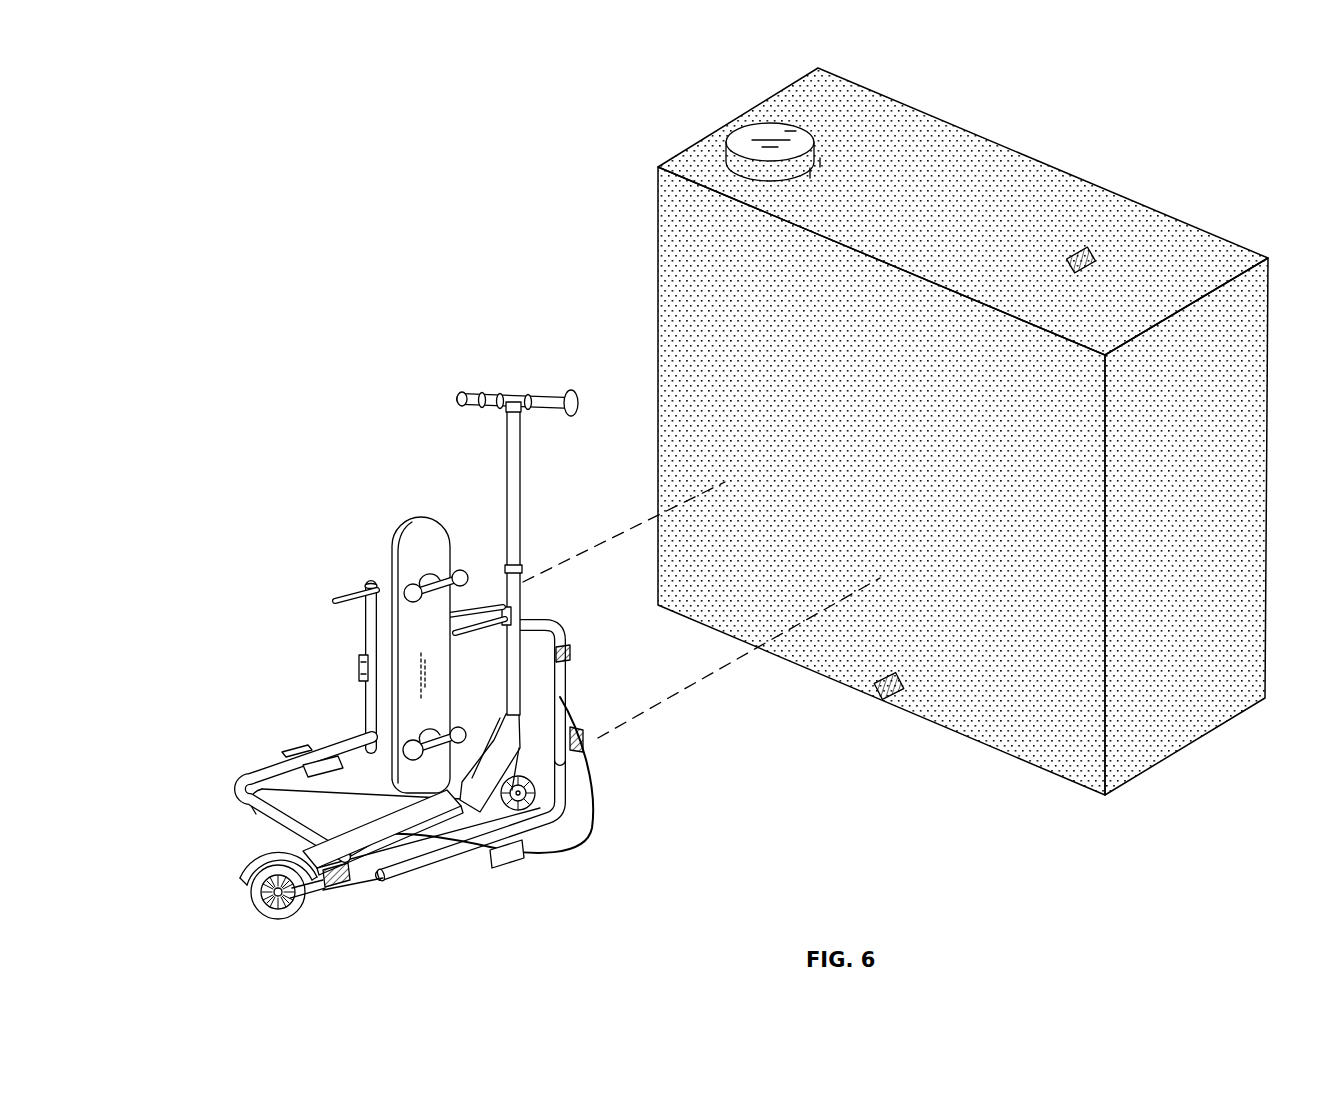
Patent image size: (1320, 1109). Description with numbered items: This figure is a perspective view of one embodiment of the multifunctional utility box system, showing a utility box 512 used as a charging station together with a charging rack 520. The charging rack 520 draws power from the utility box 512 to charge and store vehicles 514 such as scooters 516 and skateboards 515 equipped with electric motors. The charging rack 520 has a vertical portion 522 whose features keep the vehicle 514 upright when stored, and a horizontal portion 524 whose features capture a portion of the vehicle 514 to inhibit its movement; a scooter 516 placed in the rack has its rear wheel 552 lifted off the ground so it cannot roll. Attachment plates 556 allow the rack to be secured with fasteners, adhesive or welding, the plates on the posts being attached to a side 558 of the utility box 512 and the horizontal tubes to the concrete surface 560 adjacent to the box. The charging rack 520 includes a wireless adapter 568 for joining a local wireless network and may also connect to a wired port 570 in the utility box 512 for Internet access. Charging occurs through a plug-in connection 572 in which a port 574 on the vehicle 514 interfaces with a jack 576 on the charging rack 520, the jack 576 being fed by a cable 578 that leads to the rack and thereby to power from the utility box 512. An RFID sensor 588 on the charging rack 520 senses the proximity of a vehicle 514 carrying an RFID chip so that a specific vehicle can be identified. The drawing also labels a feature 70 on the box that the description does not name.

The indicator 70 is at (882, 698).
The utility box 512 is at (1130, 156).
The vehicle 514 is at (410, 689).
The skateboard 515 is at (405, 518).
The scooter 516 is at (521, 490).
The charging rack 520 is at (572, 650).
The vertical portion 522 is at (585, 680).
The horizontal portion 524 is at (462, 886).
The rear wheel 552 is at (255, 913).
The attachment plates 556 is at (358, 665).
The side 558 is at (896, 476).
The concrete surface 560 is at (401, 786).
The wireless adapter 568 is at (738, 128).
The wired port 570 is at (427, 786).
The plug-in connection 572 is at (358, 897).
The port 574 is at (320, 890).
The jack 576 is at (247, 812).
The cable 578 is at (597, 812).
The RFID sensor 588 is at (1090, 254).